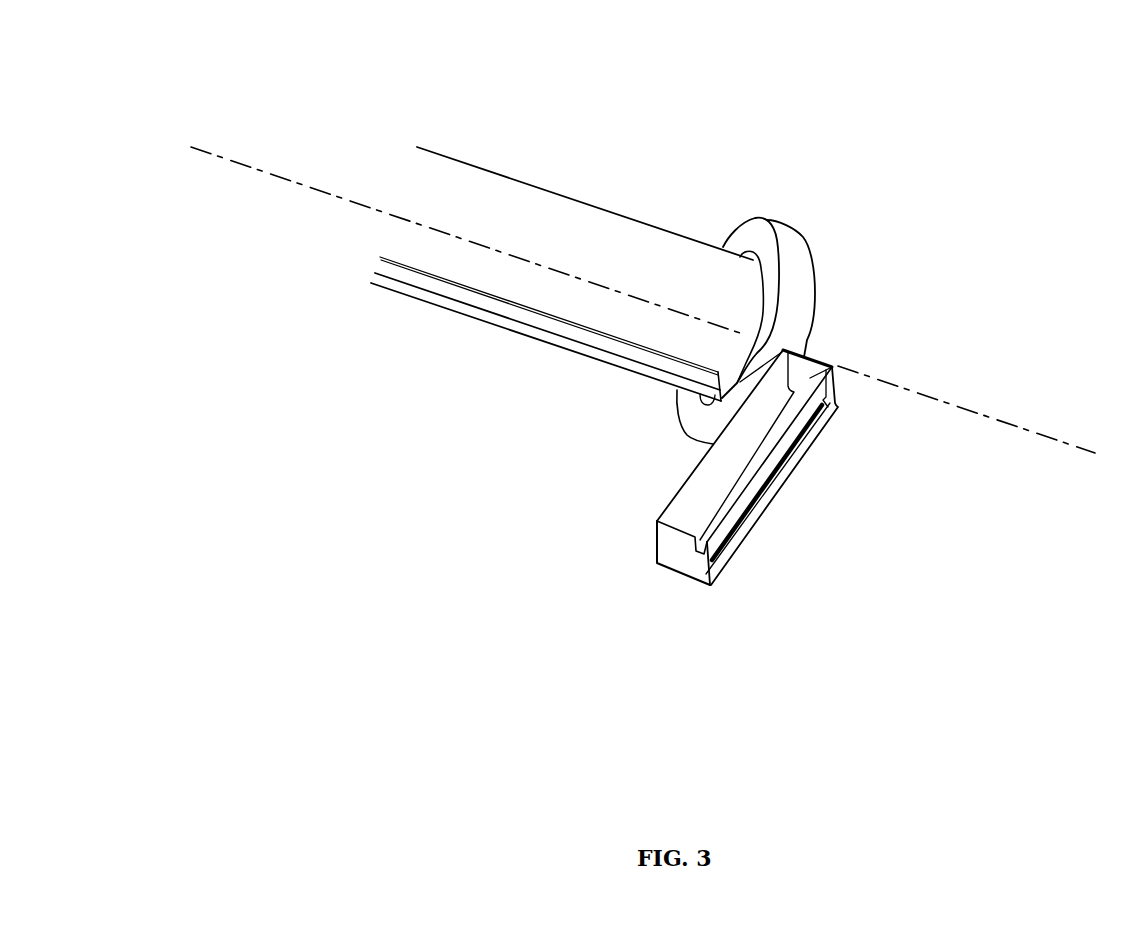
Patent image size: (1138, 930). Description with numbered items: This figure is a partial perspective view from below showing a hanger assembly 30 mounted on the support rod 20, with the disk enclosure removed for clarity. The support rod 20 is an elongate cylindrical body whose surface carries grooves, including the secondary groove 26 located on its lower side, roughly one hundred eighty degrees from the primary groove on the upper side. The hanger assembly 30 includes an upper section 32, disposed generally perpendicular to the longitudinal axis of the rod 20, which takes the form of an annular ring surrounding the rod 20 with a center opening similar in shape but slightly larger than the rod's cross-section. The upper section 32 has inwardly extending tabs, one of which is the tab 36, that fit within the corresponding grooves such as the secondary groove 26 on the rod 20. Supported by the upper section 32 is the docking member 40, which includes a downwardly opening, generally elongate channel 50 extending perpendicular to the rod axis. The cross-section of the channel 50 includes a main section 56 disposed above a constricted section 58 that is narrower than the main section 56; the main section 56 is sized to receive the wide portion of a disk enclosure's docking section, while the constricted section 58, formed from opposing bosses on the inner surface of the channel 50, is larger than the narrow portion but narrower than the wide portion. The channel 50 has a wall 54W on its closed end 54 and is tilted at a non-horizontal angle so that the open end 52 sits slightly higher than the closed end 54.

The support rod 20 is at (543, 200).
The secondary groove 26 is at (520, 318).
The hanger assembly 30 is at (853, 300).
The upper section 32 is at (747, 182).
The tab 36 is at (718, 372).
The docking member 40 is at (593, 440).
The channel 50 is at (688, 505).
The open end 52 is at (838, 403).
The closed end 54 is at (752, 608).
The wall 54W is at (693, 567).
The main section 56 is at (832, 363).
The constricted section 58 is at (813, 445).